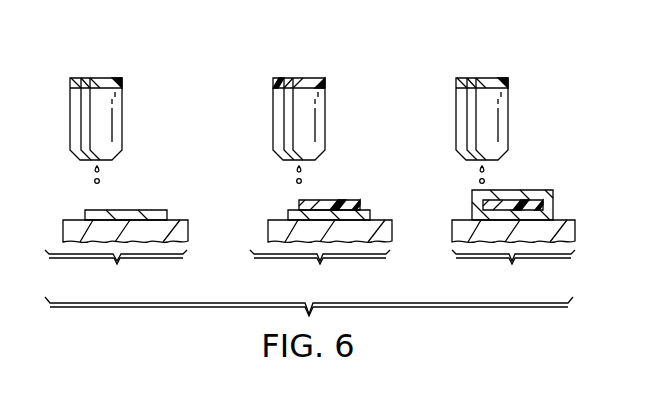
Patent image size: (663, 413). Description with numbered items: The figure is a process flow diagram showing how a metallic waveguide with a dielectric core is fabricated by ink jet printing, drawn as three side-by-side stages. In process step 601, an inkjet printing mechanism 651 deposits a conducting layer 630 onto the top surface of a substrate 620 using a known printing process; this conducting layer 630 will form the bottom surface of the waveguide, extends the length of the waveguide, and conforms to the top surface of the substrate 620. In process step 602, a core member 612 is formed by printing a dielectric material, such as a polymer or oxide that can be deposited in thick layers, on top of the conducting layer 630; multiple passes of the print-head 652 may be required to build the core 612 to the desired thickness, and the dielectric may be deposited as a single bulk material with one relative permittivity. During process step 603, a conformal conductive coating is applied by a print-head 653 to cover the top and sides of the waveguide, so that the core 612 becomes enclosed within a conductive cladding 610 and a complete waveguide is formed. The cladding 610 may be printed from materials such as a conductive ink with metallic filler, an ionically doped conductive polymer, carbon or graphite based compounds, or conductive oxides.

The inkjet printing mechanism 651 is at (84, 70).
The print-head 652 is at (288, 70).
The print-head 653 is at (496, 70).
The substrate 620 is at (72, 228).
The conducting layer 630 is at (125, 214).
The core member 612 is at (340, 205).
The conductive cladding 610 is at (528, 195).
The process step 601 is at (116, 272).
The process step 602 is at (320, 272).
The process step 603 is at (513, 272).